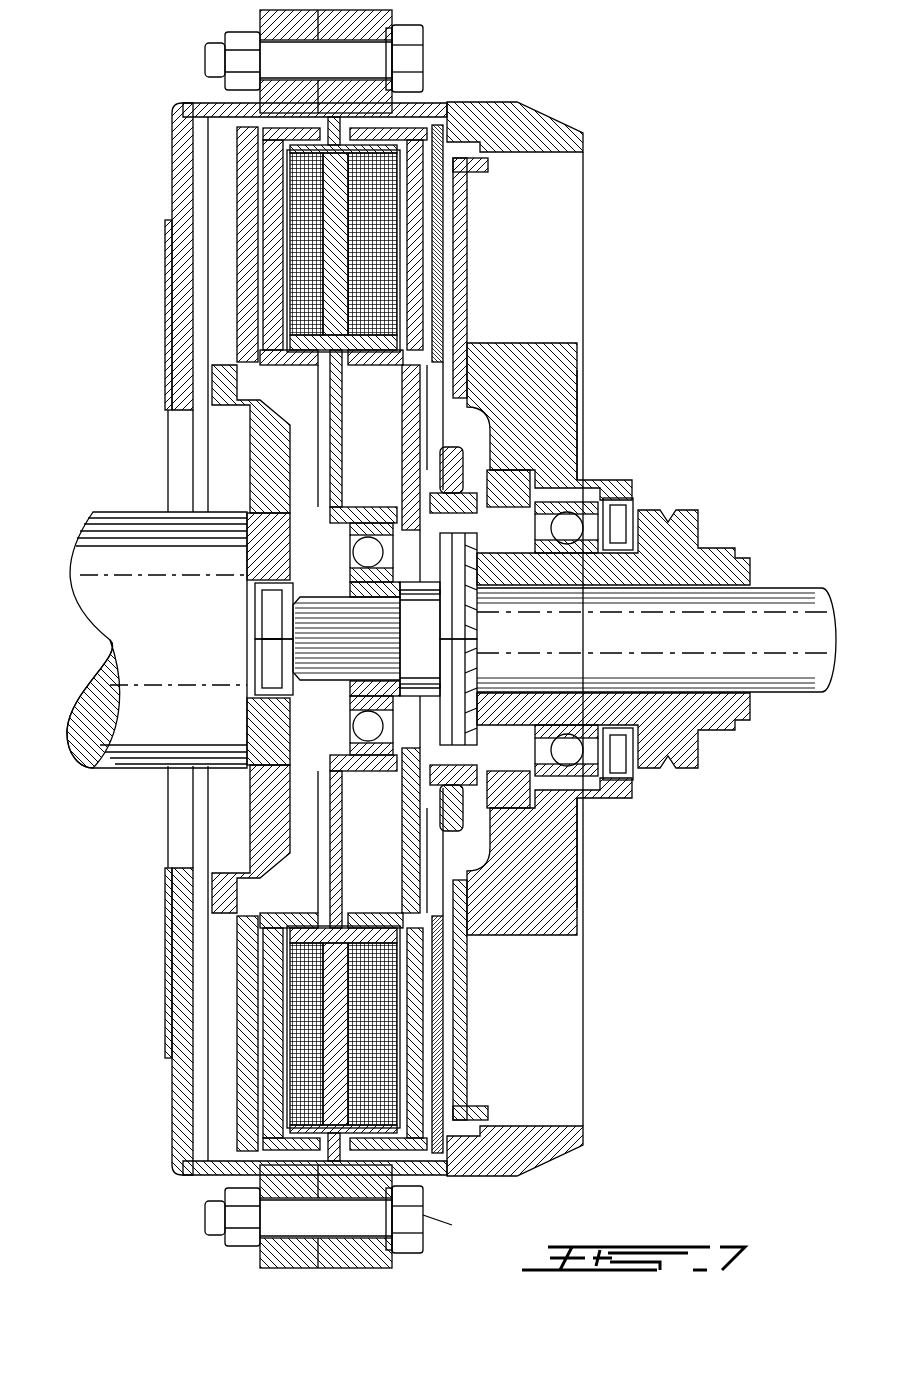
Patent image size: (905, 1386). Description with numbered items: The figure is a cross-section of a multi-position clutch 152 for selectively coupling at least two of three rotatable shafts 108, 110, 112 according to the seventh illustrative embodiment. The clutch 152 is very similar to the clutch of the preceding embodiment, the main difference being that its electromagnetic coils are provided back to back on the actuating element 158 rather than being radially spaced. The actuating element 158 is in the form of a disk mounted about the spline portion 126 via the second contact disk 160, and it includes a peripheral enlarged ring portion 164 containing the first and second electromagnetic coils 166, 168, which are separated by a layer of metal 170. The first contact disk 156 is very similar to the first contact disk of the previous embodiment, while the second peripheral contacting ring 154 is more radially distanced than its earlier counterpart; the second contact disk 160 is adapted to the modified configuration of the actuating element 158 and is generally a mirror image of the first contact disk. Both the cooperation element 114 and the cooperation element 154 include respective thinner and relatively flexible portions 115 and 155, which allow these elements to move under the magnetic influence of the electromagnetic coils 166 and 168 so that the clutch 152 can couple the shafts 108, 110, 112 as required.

The rotatable shaft 108 is at (130, 560).
The rotatable shaft 110 is at (688, 560).
The rotatable shaft 112 is at (785, 652).
The cooperation element 114 is at (234, 151).
The thinner and relatively flexible portion 115 is at (240, 372).
The spline portion 126 is at (318, 655).
The multi-position clutch 152 is at (668, 148).
The second peripheral contacting ring 154 is at (448, 142).
The thinner and relatively flexible portion 155 is at (452, 408).
The first contact disk 156 is at (262, 102).
The actuating element 158 is at (425, 64).
The second contact disk 160 is at (440, 290).
The peripheral enlarged ring portion 164 is at (322, 250).
The first electromagnetic coil 166 is at (297, 213).
The second electromagnetic coil 168 is at (457, 237).
The layer of metal 170 is at (330, 975).